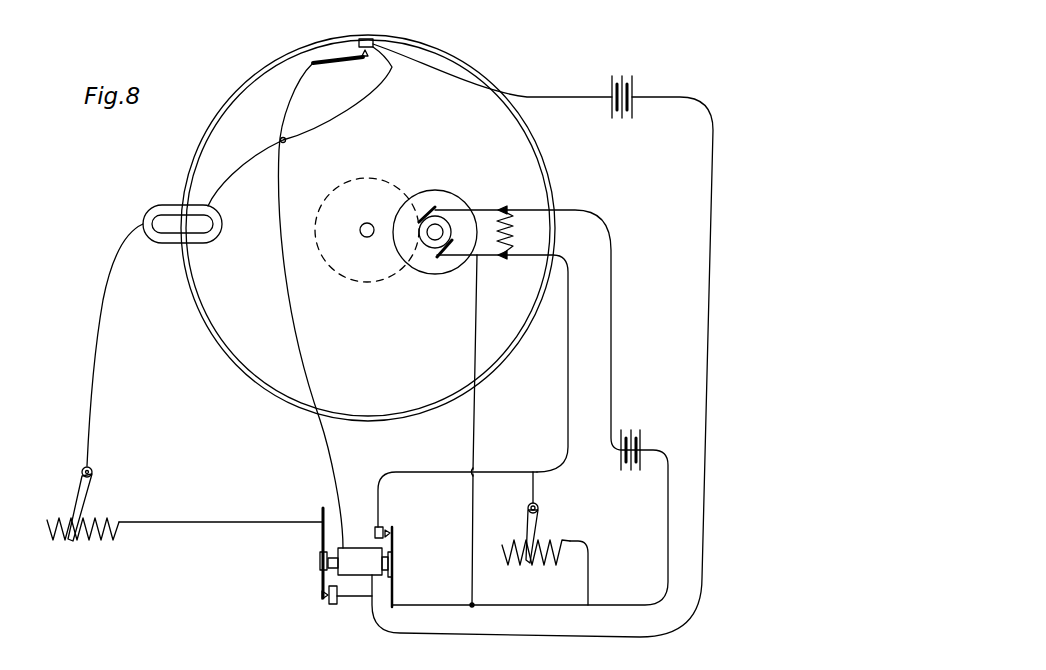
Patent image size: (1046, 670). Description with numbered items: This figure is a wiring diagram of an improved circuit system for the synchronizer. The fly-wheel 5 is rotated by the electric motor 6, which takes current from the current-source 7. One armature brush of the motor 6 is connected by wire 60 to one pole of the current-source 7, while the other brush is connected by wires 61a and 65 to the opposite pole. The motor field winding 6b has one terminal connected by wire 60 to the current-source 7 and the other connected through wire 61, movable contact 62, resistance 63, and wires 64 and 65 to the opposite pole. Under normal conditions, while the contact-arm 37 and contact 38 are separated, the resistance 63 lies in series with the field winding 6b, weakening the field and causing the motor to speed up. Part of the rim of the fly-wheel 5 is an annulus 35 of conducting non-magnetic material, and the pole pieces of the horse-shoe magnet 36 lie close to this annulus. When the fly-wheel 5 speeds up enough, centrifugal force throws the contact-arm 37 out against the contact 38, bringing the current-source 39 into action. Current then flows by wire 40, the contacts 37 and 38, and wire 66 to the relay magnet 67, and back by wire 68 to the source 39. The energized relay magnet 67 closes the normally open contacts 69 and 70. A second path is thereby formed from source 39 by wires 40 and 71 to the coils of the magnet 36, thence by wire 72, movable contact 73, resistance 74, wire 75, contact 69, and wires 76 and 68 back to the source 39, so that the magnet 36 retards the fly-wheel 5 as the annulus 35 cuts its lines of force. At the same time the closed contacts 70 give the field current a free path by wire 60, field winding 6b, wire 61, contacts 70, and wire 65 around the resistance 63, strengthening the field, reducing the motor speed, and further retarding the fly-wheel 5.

The fly-wheel 5 is at (229, 361).
The annulus 35 is at (398, 415).
The electric motor 6 is at (440, 191).
The motor field winding 6b is at (523, 232).
The current-source 7 is at (625, 472).
The horse-shoe magnet 36 is at (153, 207).
The contact-arm 37 is at (342, 63).
The contact 38 is at (362, 38).
The current-source 39 is at (637, 89).
The wire 40 is at (562, 97).
The wire 60 is at (612, 336).
The wire 61 is at (567, 396).
The wire 61a is at (476, 366).
The movable contact 62 is at (528, 520).
The resistance 63 is at (557, 540).
The wire 64 is at (598, 582).
The wire 65 is at (667, 534).
The wire 66 is at (292, 320).
The relay magnet 67 is at (357, 547).
The wire 68 is at (709, 215).
The contact 69 is at (314, 573).
The contact 70 is at (456, 539).
The wire 71 is at (338, 112).
The wire 72 is at (95, 365).
The movable contact 73 is at (93, 491).
The resistance 74 is at (65, 548).
The wire 75 is at (228, 524).
The wire 76 is at (356, 604).